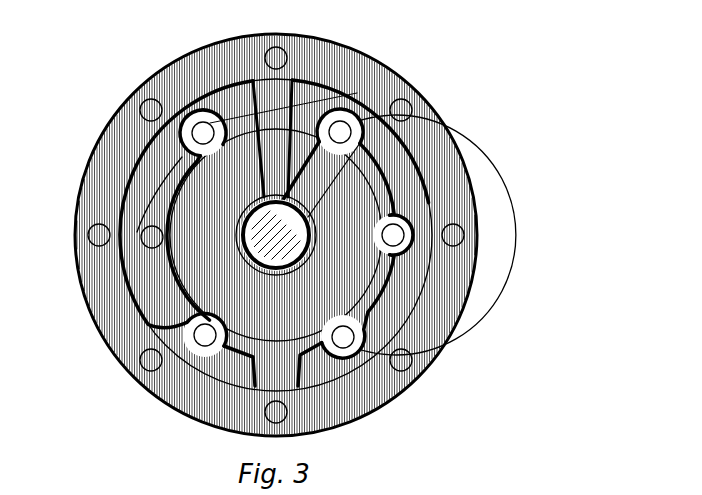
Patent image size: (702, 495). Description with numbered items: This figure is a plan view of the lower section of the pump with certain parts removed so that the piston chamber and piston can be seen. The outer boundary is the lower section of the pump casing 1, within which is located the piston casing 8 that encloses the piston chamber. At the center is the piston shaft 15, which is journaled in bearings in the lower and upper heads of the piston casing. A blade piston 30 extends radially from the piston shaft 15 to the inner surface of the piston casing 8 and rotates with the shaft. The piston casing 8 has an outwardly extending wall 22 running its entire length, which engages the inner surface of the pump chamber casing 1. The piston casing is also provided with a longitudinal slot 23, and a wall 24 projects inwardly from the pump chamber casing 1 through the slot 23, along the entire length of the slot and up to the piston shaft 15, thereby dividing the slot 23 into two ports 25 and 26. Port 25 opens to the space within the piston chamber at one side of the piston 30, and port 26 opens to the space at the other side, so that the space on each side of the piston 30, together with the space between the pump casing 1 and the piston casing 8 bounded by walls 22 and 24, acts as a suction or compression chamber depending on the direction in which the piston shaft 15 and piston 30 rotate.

The lower section of the pump casing 1 is at (462, 313).
The piston casing 8 is at (393, 265).
The piston shaft 15 is at (252, 258).
The outwardly extending wall 22 is at (270, 370).
The longitudinal slot 23 is at (227, 125).
The wall 24 is at (280, 105).
The port 25 is at (303, 128).
The port 26 is at (250, 153).
The blade piston 30 is at (323, 183).